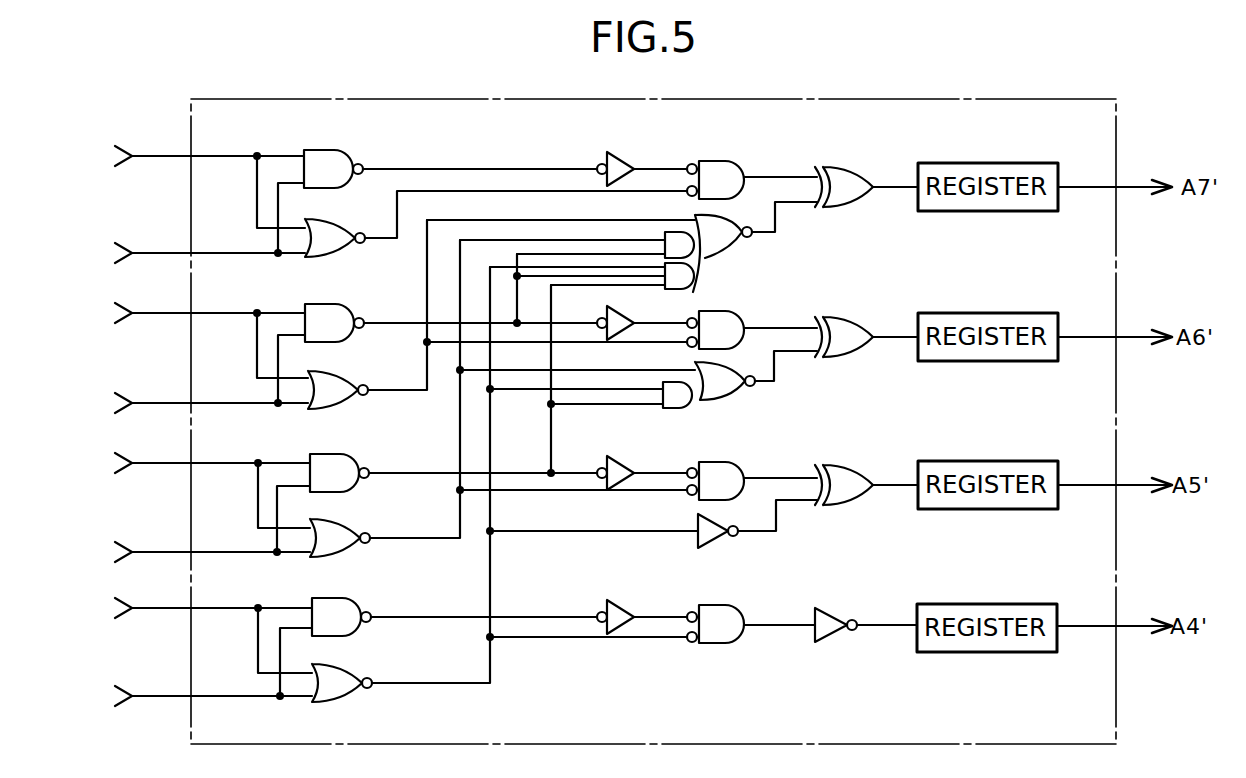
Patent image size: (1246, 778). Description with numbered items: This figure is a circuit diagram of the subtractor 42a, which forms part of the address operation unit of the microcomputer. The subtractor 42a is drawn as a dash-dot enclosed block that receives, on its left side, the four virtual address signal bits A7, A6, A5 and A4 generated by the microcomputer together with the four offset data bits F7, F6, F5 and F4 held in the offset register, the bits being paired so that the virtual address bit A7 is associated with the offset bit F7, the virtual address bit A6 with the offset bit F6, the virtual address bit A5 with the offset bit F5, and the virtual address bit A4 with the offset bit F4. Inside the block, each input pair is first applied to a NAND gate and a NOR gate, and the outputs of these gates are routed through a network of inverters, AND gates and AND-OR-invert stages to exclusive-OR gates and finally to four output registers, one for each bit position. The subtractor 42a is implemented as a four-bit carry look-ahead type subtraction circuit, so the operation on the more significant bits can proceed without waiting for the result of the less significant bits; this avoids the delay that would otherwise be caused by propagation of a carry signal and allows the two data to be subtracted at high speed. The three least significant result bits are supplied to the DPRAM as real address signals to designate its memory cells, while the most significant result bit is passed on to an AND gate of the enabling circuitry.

The subtractor 42a is at (1035, 99).
The virtual address signal bit A7 is at (188, 157).
The offset data bit F7 is at (187, 254).
The virtual address signal bit A6 is at (188, 314).
The offset data bit F6 is at (189, 404).
The virtual address signal bit A5 is at (191, 464).
The offset data bit F5 is at (190, 553).
The virtual address signal bit A4 is at (192, 609).
The offset data bit F4 is at (191, 697).